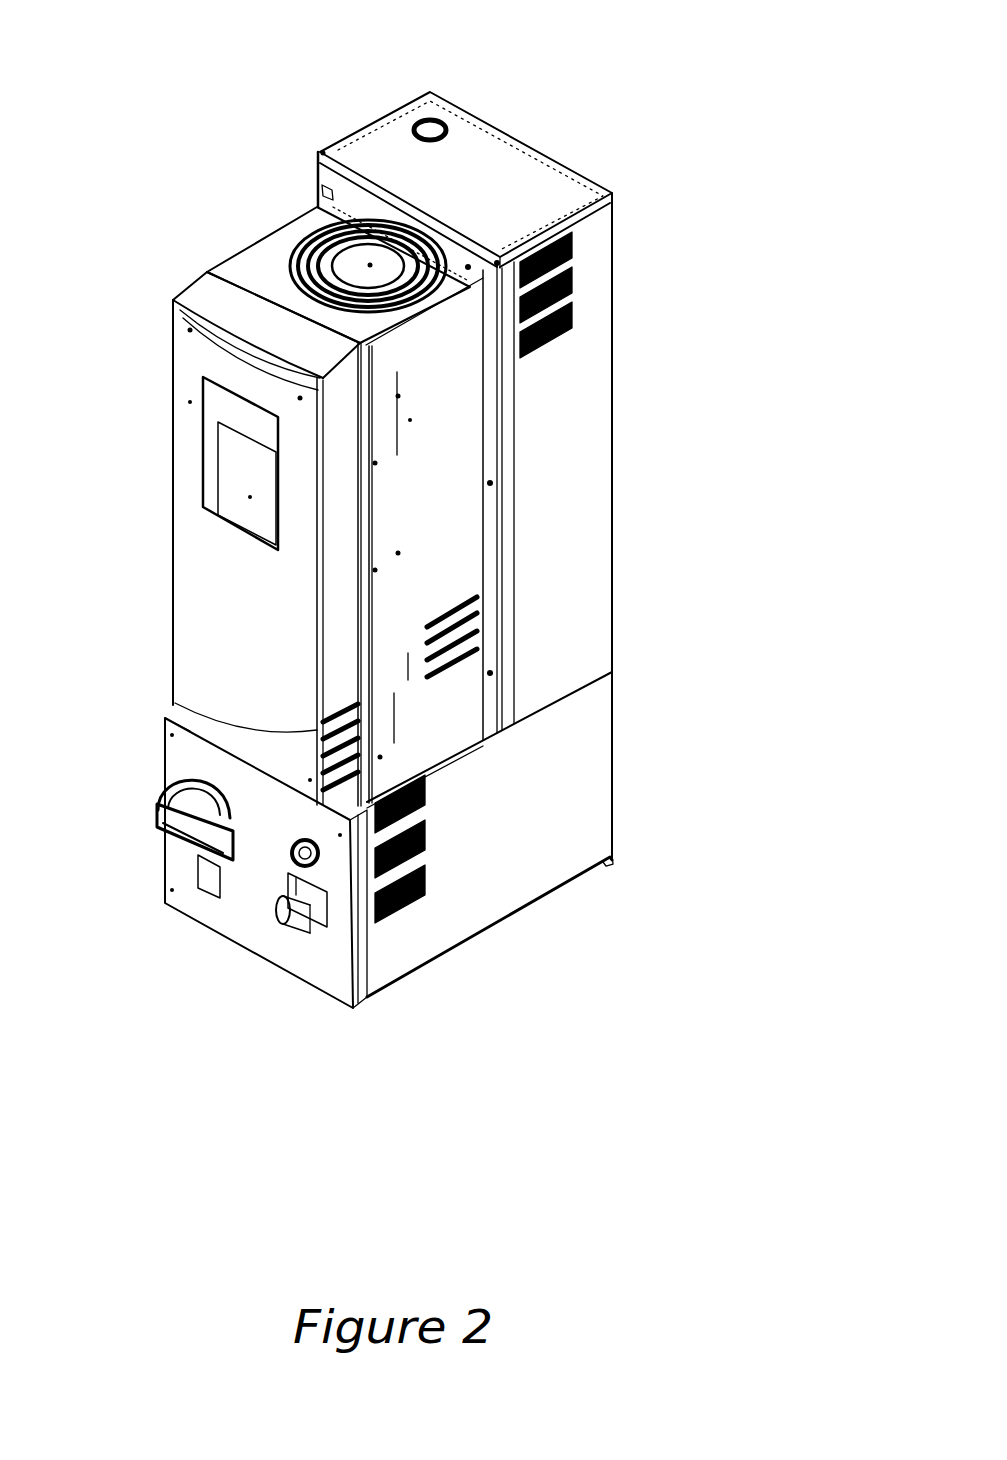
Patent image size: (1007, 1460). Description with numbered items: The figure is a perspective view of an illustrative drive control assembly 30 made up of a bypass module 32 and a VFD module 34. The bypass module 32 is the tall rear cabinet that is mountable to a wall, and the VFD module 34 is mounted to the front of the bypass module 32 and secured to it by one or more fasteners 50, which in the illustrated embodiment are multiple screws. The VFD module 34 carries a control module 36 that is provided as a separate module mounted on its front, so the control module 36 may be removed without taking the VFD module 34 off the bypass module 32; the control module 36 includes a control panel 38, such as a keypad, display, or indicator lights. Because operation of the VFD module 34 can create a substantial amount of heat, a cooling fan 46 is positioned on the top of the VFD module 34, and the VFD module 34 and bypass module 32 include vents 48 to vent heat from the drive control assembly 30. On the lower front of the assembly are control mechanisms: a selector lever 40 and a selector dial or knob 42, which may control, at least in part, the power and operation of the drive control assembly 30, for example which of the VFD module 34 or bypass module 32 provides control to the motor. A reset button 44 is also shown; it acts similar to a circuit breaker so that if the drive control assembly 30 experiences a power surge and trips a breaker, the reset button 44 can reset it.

The drive control assembly 30 is at (640, 84).
The bypass module 32 is at (585, 568).
The VFD module 34 is at (455, 420).
The control module 36 is at (200, 600).
The control panel 38 is at (237, 453).
The selector lever 40 is at (183, 837).
The selector dial or knob 42 is at (288, 922).
The reset button 44 is at (318, 862).
The cooling fan 46 is at (290, 270).
The vents 48 is at (575, 247).
The fasteners 50 is at (323, 153).